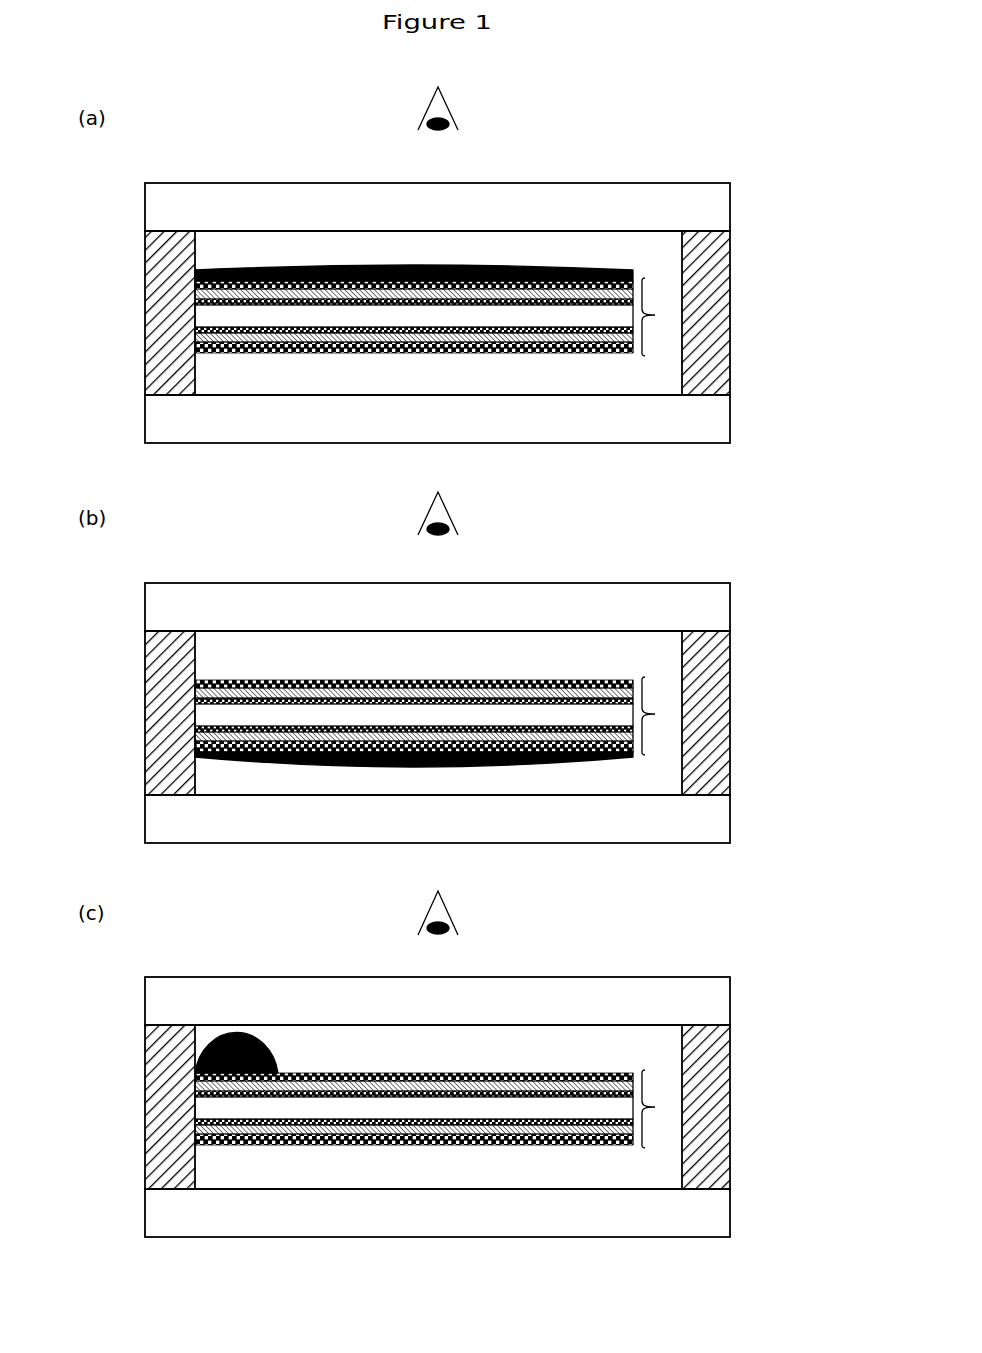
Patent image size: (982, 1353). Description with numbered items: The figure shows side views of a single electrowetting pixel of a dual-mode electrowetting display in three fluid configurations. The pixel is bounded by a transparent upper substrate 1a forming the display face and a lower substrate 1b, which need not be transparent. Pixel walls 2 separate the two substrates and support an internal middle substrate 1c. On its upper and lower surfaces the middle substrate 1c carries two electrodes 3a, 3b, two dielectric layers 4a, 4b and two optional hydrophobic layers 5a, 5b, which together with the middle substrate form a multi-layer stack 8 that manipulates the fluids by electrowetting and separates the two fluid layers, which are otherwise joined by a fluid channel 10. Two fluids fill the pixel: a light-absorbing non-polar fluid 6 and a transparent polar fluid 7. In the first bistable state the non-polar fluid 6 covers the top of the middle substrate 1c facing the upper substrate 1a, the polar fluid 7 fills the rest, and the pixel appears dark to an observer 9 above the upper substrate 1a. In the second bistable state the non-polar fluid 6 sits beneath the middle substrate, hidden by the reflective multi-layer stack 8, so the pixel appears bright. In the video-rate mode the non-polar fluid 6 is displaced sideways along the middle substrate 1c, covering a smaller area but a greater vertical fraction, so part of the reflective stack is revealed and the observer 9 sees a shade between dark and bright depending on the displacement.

The upper substrate 1a is at (693, 204).
The lower substrate 1b is at (693, 422).
The middle substrate 1c is at (202, 317).
The pixel walls 2 is at (713, 278).
The electrode 3a is at (195, 305).
The electrode 3b is at (195, 330).
The dielectric layer 4a is at (195, 292).
The dielectric layer 4b is at (195, 340).
The hydrophobic layer 5a is at (195, 281).
The hydrophobic layer 5b is at (195, 353).
The non-polar fluid 6 is at (613, 270).
The polar fluid 7 is at (652, 380).
The multi-layer stack 8 is at (655, 315).
The observer 9 is at (438, 108).
The fluid channel 10 is at (660, 333).